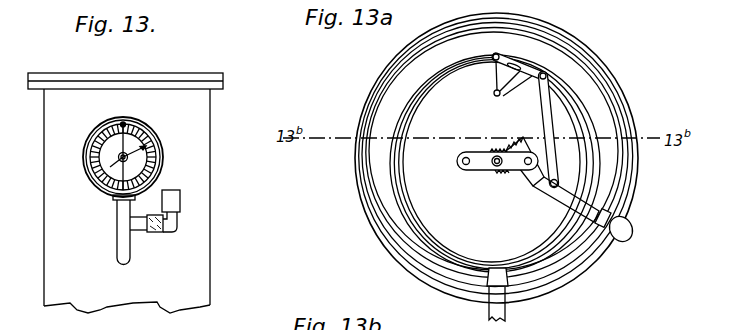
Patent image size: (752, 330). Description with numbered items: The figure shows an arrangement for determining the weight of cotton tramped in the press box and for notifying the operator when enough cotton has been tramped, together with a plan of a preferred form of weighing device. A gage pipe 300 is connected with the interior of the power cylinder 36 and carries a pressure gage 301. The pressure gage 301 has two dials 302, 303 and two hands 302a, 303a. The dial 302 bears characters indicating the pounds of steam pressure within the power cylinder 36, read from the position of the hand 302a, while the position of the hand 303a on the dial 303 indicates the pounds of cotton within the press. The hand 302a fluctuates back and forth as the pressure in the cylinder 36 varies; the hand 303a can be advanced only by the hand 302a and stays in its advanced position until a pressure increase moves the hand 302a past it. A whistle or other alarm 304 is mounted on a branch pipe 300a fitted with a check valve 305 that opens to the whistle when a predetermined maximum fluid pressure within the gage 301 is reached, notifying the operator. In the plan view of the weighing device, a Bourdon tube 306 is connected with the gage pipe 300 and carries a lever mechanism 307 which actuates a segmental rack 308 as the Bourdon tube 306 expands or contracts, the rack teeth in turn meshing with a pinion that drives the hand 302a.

In FIG. 13, the power cylinder 36 is at (200, 260).
In FIG. 13, the gage pipe 300 is at (117, 243).
In FIG. 13A, the gage pipe 300 is at (506, 320).
In FIG. 13, the branch pipe 300a is at (150, 233).
In FIG. 13, the pressure gage 301 is at (84, 144).
In FIG. 13A, the pressure gage 301 is at (357, 153).
In FIG. 13, the dial 302 is at (101, 121).
In FIG. 13, the hand 302a is at (127, 122).
In FIG. 13, the dial 303 is at (150, 146).
In FIG. 13, the hand 303a is at (112, 187).
In FIG. 13, the whistle or alarm 304 is at (180, 203).
In FIG. 13, the check valve 305 is at (177, 224).
In FIG. 13A, the Bourdon tube 306 is at (413, 118).
In FIG. 13A, the lever mechanism 307 is at (495, 72).
In FIG. 13A, the segmental rack 308 is at (514, 143).